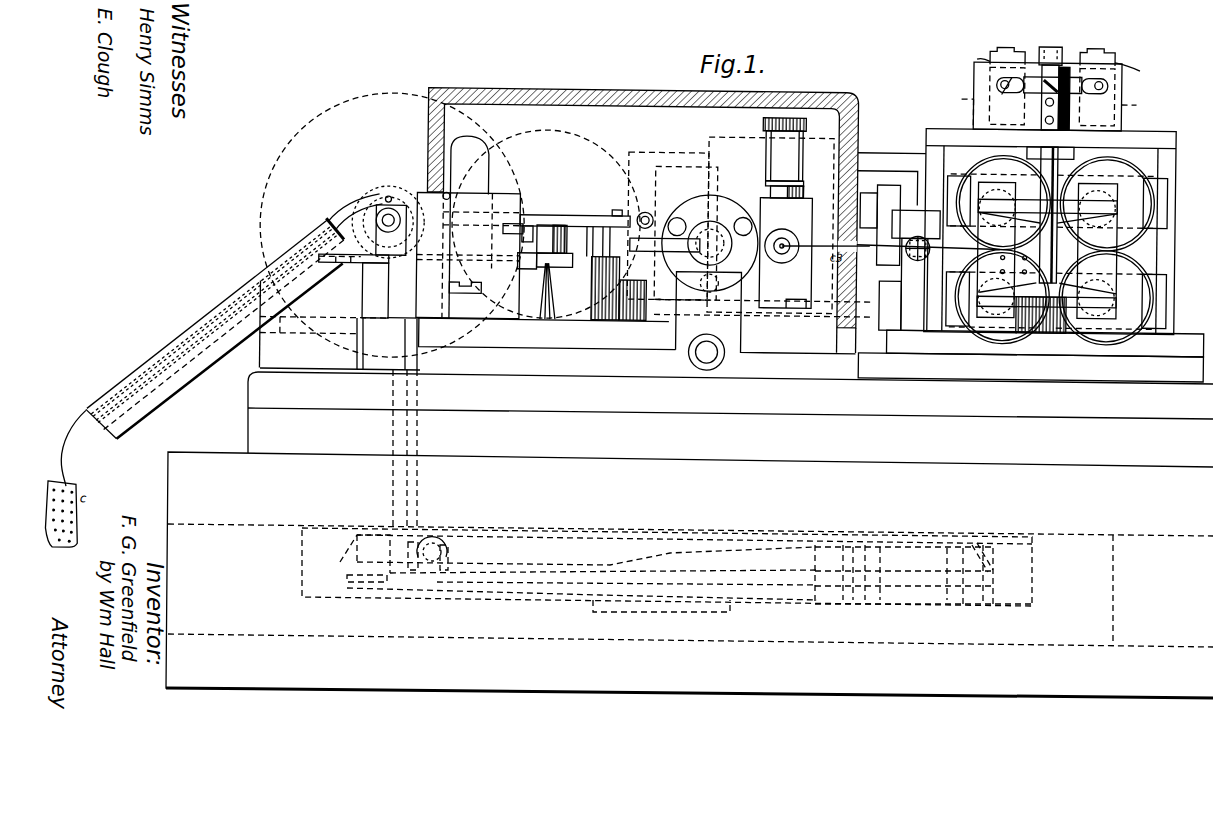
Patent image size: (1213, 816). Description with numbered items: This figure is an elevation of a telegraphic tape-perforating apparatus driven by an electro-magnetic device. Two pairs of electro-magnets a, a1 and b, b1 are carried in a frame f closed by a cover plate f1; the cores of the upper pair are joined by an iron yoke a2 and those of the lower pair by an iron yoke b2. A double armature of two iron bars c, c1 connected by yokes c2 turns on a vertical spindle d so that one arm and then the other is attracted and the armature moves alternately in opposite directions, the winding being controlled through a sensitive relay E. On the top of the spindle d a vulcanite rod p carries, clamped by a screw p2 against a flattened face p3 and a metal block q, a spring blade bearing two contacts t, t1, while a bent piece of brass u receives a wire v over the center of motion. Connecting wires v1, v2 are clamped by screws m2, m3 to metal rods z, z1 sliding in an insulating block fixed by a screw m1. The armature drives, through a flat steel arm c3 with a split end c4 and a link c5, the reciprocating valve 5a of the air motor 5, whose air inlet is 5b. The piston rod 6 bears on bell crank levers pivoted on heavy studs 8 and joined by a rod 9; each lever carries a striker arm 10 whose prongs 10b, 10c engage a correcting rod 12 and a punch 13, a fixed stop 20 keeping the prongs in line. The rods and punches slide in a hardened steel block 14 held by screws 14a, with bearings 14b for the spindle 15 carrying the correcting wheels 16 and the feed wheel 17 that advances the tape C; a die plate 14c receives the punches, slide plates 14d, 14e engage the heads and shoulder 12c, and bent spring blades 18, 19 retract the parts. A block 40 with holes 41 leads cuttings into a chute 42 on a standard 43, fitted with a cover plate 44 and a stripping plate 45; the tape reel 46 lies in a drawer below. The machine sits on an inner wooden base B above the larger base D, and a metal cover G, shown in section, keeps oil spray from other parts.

The air motor 5 is at (758, 200).
The reciprocating valve 5a is at (782, 236).
The air inlet 5b is at (712, 352).
The piston rod 6 is at (716, 236).
The heavy studs 8 is at (618, 206).
The rod 9 is at (555, 246).
The striker arm 10 is at (606, 298).
The prong 10b is at (640, 212).
The prong 10c is at (558, 278).
The correcting rod 12 is at (468, 256).
The shoulder 12c is at (437, 200).
The punch 13 is at (482, 276).
The hardened steel block 14 is at (434, 277).
The screws 14a is at (486, 296).
The bearings 14b is at (393, 318).
The die plate 14c is at (392, 290).
The slide plate 14d is at (560, 214).
The slide plate 14e is at (521, 259).
The spindle 15 is at (378, 228).
The correcting wheel 16 is at (395, 205).
The feed wheel 17 is at (386, 193).
The bent spring blade 18 is at (478, 142).
The bent spring blade 19 is at (455, 257).
The fixed stop 20 is at (565, 330).
The block 40 is at (362, 300).
The holes 41 is at (345, 265).
The chute 42 is at (252, 285).
The standard 43 is at (323, 324).
The plate 44 is at (350, 202).
The plate 45 is at (330, 214).
The tape reel 46 is at (667, 570).
The inner wooden base B is at (637, 320).
The tape C is at (400, 357).
The larger base D is at (689, 575).
The sensitive relay E is at (652, 439).
The metal cover G is at (598, 92).
The electro-magnet a is at (1003, 202).
The electro-magnet a1 is at (1107, 203).
The iron yoke a2 is at (1148, 183).
The electro-magnet b is at (1002, 296).
The electro-magnet b1 is at (1106, 297).
The iron yoke b2 is at (1148, 281).
The iron bar c is at (975, 248).
The iron bar c1 is at (1116, 252).
The yokes c2 is at (1053, 252).
The flat arm c3 is at (986, 264).
The split end c4 is at (1090, 300).
The link c5 is at (780, 271).
The spindle d is at (1047, 215).
The frame f is at (1050, 232).
The cover plate f1 is at (1112, 158).
The screw m1 is at (1097, 47).
The screw m2 is at (1003, 50).
The screw m3 is at (1113, 52).
The vulcanite rod p is at (1070, 122).
The screw p2 is at (1040, 88).
The flattened face p3 is at (1070, 103).
The metal block q is at (1000, 98).
The electrical contact t is at (995, 86).
The electrical contact t1 is at (1106, 86).
The bent piece of brass u is at (1053, 77).
The wire v is at (1050, 47).
The connecting wire v1 is at (975, 55).
The connecting wire v2 is at (1135, 70).
The metal rod z is at (958, 112).
The metal rod z1 is at (1136, 107).